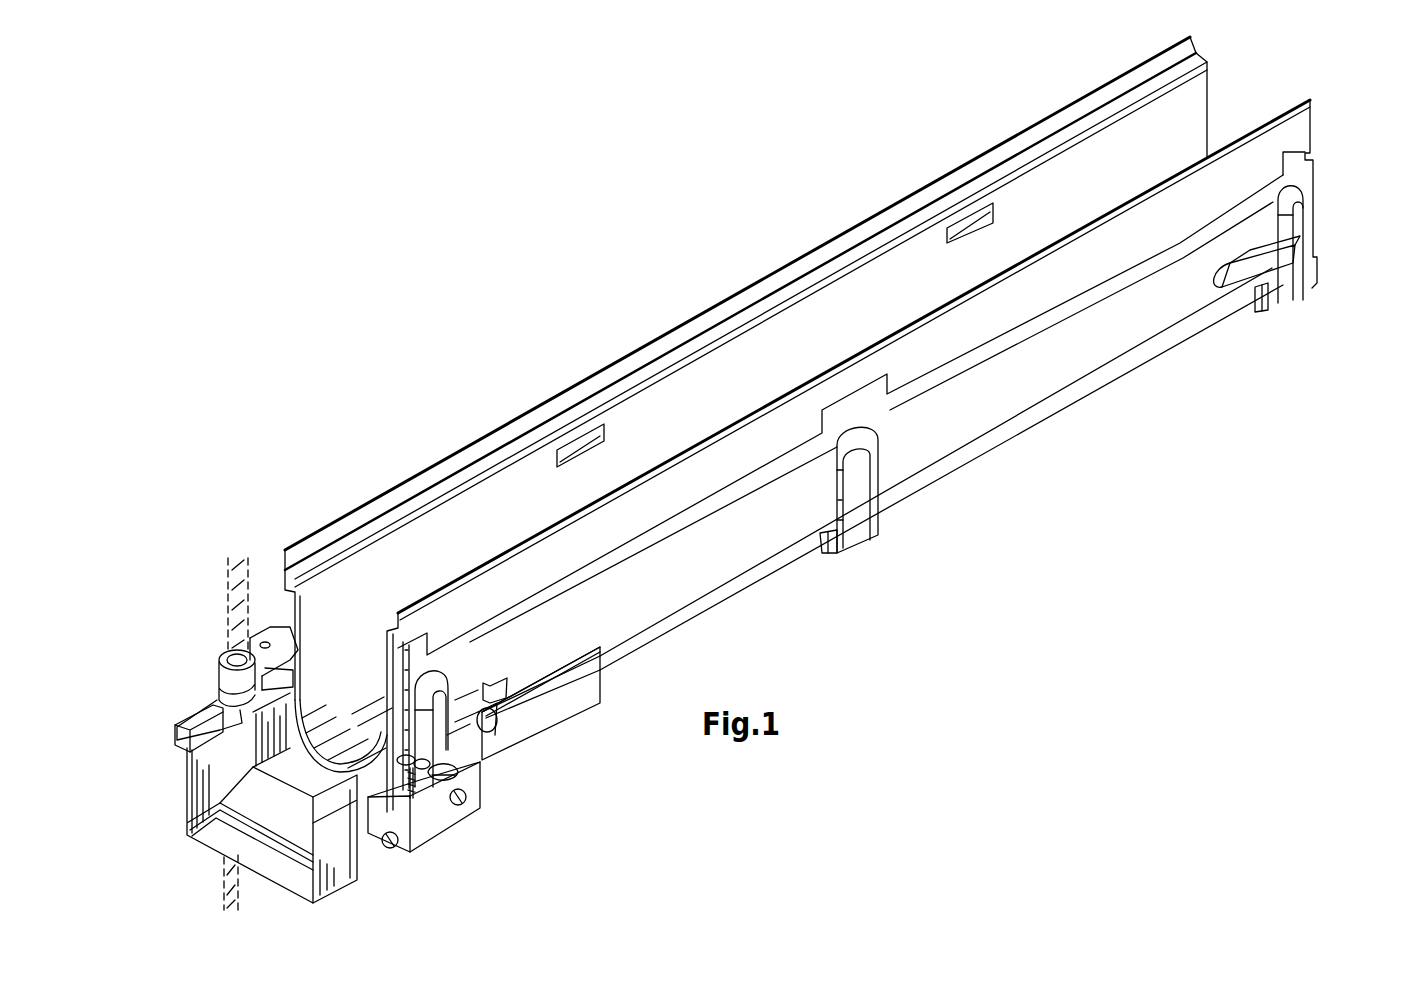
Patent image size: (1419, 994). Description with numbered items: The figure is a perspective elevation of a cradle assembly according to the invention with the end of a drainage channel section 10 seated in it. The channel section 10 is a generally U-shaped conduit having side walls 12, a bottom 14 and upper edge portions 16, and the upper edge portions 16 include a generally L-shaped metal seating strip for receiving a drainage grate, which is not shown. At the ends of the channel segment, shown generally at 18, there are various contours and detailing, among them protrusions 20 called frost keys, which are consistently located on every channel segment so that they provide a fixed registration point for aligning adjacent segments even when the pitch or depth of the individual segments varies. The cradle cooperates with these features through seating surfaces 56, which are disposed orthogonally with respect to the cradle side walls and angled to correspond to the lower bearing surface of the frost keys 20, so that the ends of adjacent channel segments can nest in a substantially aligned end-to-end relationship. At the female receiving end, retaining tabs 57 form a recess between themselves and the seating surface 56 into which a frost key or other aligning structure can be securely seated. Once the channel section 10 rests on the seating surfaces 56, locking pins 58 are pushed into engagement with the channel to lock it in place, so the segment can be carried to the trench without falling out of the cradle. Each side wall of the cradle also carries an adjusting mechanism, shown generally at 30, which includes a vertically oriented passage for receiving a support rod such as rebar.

The drainage channel section 10 is at (764, 475).
The side walls 12 is at (827, 404).
The bottom 14 is at (692, 627).
The upper edge portions 16 is at (893, 215).
The end contours and detailing 18 is at (1340, 233).
The frost keys 20 is at (1292, 282).
The adjusting mechanism 30 is at (200, 670).
The seating surfaces 56 is at (180, 733).
The retaining tabs 57 is at (338, 795).
The locking pins 58 is at (496, 718).